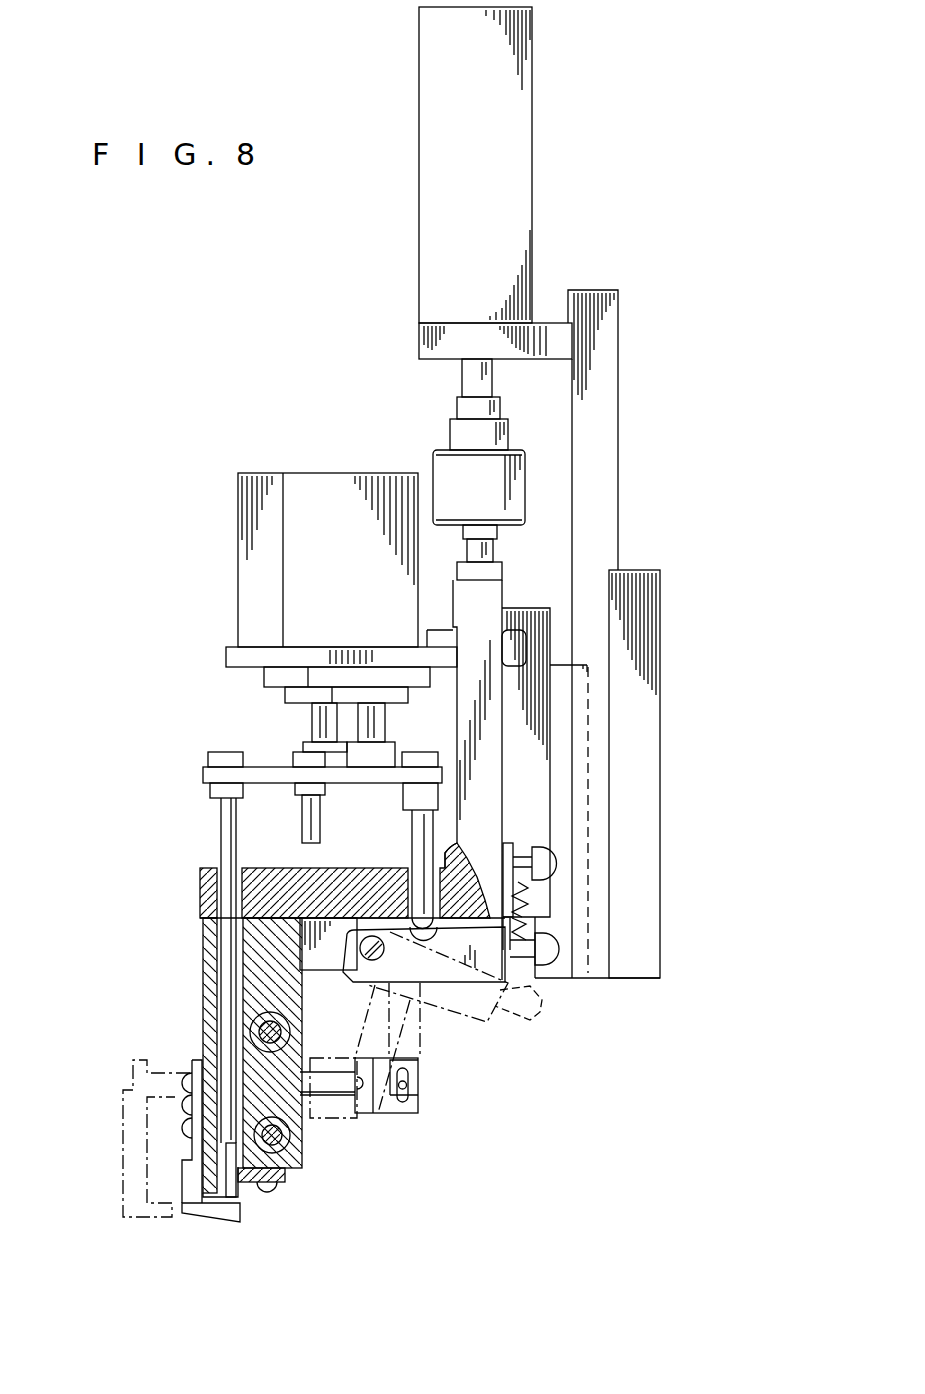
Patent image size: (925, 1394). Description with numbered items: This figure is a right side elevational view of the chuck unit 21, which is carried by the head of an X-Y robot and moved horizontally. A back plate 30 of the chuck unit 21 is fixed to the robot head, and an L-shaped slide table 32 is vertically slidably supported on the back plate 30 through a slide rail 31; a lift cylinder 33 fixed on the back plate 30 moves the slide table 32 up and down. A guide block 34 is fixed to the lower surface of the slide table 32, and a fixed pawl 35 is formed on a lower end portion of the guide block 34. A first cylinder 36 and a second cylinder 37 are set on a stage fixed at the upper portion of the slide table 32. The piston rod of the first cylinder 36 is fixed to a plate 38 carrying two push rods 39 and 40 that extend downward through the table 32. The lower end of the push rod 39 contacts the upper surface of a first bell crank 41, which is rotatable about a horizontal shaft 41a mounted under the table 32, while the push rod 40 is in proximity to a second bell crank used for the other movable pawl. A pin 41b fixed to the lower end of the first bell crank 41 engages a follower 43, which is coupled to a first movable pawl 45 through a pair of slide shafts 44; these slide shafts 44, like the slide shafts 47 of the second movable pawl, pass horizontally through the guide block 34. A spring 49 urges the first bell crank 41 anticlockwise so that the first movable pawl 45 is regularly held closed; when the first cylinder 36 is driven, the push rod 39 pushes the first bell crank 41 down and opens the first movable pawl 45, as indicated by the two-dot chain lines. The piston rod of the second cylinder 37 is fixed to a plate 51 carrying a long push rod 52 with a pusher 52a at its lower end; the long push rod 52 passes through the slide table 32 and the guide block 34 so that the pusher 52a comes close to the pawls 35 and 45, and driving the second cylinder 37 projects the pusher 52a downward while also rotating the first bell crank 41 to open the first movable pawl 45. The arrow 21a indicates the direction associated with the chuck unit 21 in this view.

The chuck unit 21 is at (692, 281).
The feed direction 21a is at (228, 1232).
The back plate 30 is at (646, 668).
The slide rail 31 is at (567, 733).
The slide table 32 is at (492, 790).
The lift cylinder 33 is at (518, 143).
The guide block 34 is at (204, 938).
The fixed pawl 35 is at (243, 1212).
The first cylinder 36 is at (344, 488).
The second cylinder 37 is at (248, 526).
The plate 38 is at (375, 772).
The push rod 39 is at (412, 840).
The push rod 40 is at (304, 830).
The first bell crank 41 is at (452, 955).
The horizontal shaft 41a is at (360, 978).
The pin 41b is at (400, 1100).
The follower 43 is at (385, 1117).
The slide shafts 44 is at (327, 1100).
The first movable pawl 45 is at (197, 1212).
The slide shafts 47 is at (258, 1030).
The spring 49 is at (540, 903).
The plate 51 is at (262, 777).
The long push rod 52 is at (220, 838).
The pusher 52a is at (235, 1152).